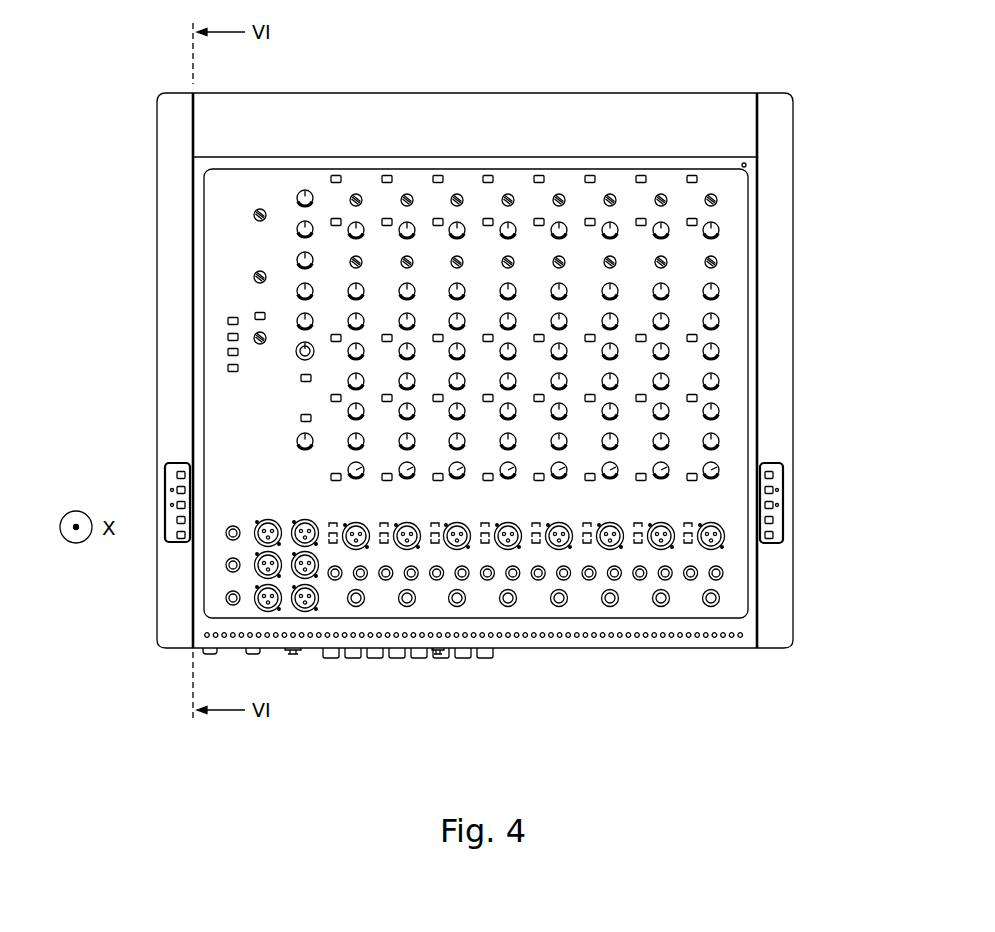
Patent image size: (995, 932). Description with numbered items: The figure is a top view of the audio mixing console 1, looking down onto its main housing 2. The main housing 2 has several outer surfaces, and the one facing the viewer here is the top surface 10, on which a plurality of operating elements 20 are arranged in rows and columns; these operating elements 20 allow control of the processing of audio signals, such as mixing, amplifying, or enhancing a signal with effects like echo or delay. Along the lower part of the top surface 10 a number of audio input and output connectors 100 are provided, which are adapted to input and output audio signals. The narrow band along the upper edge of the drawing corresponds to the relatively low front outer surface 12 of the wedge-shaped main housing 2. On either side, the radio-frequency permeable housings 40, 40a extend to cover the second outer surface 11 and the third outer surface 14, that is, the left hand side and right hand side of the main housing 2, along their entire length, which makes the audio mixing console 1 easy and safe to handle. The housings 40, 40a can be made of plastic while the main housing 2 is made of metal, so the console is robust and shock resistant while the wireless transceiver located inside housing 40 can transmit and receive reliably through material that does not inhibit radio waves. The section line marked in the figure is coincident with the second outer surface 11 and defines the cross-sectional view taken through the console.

The audio mixing console 1 is at (138, 130).
The main housing 2 is at (747, 165).
The top surface 10 is at (227, 410).
The second outer surface 11 is at (193, 305).
The front outer surface 12 is at (614, 157).
The third outer surface 14 is at (748, 310).
The operating elements 20 is at (720, 350).
The radio-frequency permeable housing 40 is at (168, 624).
The radio-frequency permeable housing 40a is at (780, 633).
The audio input and output connectors 100 is at (359, 606).